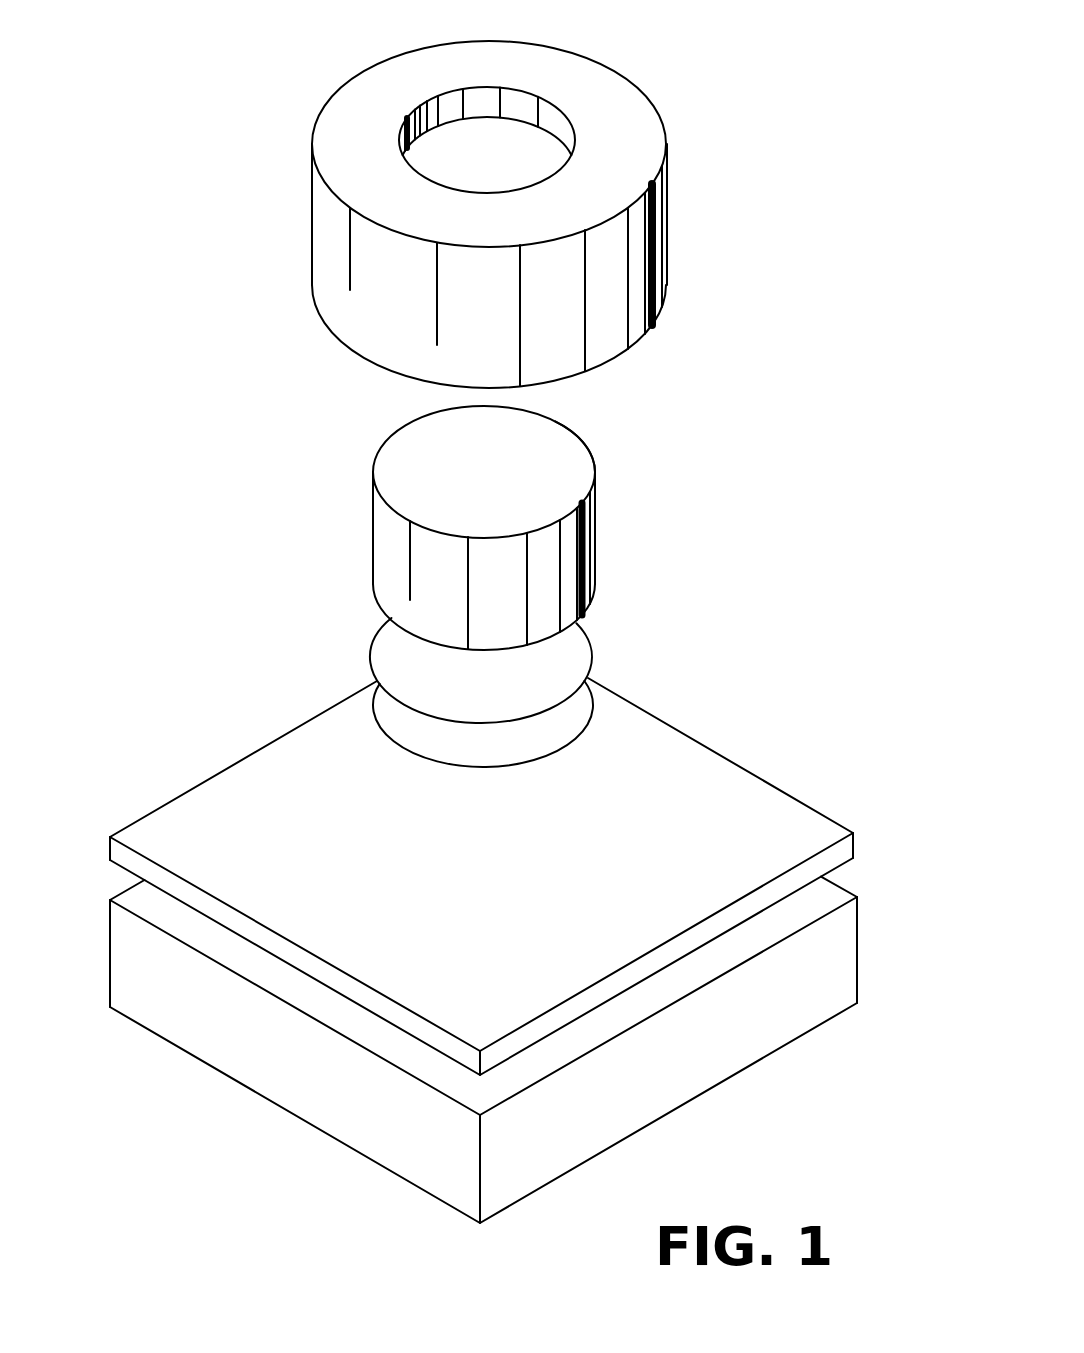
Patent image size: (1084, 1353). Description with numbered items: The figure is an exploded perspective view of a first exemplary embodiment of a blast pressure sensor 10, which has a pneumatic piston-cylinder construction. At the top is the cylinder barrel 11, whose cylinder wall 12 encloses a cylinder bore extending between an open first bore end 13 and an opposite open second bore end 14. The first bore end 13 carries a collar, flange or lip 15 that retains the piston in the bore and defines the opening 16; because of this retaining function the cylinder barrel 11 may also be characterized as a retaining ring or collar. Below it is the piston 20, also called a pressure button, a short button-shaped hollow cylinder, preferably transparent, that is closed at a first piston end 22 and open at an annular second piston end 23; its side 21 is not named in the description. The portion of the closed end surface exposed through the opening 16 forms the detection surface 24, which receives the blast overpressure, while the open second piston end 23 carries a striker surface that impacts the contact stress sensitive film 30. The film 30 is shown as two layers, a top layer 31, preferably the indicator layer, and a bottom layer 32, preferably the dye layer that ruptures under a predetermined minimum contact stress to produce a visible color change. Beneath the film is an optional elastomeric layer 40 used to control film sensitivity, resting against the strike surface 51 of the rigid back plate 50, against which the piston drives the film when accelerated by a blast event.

The blast pressure sensor 10 is at (528, 215).
The cylinder barrel 11 is at (684, 253).
The cylinder wall 12 is at (340, 303).
The first bore end 13 is at (337, 127).
The second bore end 14 is at (392, 370).
The lip 15 is at (517, 108).
The opening 16 is at (514, 172).
The piston 20 is at (500, 528).
The side surface of cylindrical magnet 21 is at (395, 552).
The first piston end 22 is at (592, 458).
The second piston end 23 is at (582, 620).
The detection surface 24 is at (515, 487).
The contact stress sensitive film 30 is at (484, 699).
The top layer 31 is at (573, 670).
The bottom layer 32 is at (560, 728).
The elastomeric layer 40 is at (567, 927).
The back plate 50 is at (518, 1040).
The strike surface 51 is at (822, 898).